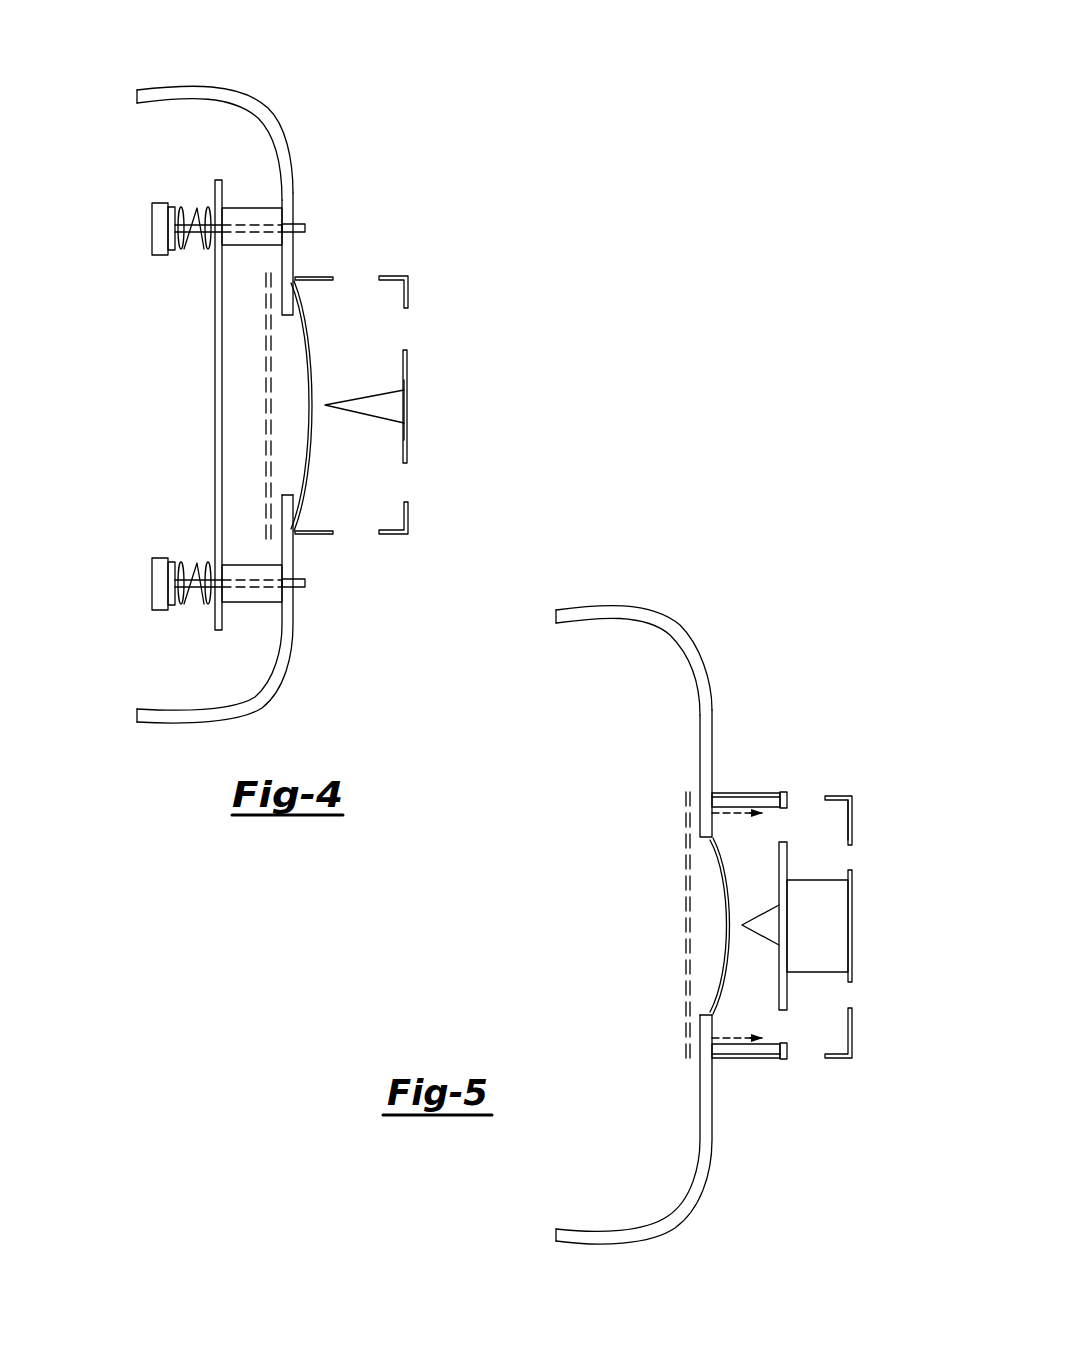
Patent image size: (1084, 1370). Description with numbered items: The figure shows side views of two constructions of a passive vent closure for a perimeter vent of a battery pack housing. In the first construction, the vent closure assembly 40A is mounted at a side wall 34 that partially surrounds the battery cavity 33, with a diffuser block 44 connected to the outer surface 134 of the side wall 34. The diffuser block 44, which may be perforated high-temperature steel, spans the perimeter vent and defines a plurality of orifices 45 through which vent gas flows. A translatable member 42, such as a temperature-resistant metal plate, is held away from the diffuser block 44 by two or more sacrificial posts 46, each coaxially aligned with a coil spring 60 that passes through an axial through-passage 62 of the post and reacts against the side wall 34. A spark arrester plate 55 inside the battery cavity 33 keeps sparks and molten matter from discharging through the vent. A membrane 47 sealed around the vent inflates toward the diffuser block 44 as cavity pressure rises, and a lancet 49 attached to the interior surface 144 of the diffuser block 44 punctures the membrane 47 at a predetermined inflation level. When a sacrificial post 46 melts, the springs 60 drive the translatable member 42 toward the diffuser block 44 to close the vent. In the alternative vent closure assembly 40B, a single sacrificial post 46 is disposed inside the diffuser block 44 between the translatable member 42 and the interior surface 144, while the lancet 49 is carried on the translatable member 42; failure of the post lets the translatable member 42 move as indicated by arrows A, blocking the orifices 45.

In FIG. 4, the battery cavity 33 is at (142, 160).
In FIG. 4, the side wall 34 is at (105, 88).
In FIG. 5, the side wall 34 is at (563, 580).
In FIG. 4, the vent closure assembly 40A is at (383, 138).
In FIG. 5, the vent closure assembly 40B is at (823, 612).
In FIG. 4, the outer surface 134 is at (258, 98).
In FIG. 5, the outer surface 134 is at (673, 620).
In FIG. 4, the translatable member 42 is at (215, 453).
In FIG. 5, the translatable member 42 is at (790, 860).
In FIG. 4, the diffuser block 44 is at (415, 364).
In FIG. 5, the diffuser block 44 is at (865, 1033).
In FIG. 4, the orifices 45 is at (357, 278).
In FIG. 5, the orifices 45 is at (798, 787).
In FIG. 4, the sacrificial post 46 is at (252, 207).
In FIG. 5, the sacrificial post 46 is at (823, 930).
In FIG. 4, the membrane 47 is at (310, 335).
In FIG. 5, the membrane 47 is at (732, 888).
In FIG. 4, the lancet 49 is at (380, 405).
In FIG. 5, the lancet 49 is at (763, 932).
In FIG. 4, the spark arrester plate 55 is at (267, 400).
In FIG. 5, the spark arrester plate 55 is at (683, 917).
In FIG. 4, the springs 60 is at (185, 252).
In FIG. 4, the axial through-passage 62 is at (245, 238).
In FIG. 4, the interior surface 144 is at (404, 435).
In FIG. 5, the interior surface 144 is at (845, 822).
In FIG. 5, the arrows A is at (731, 812).